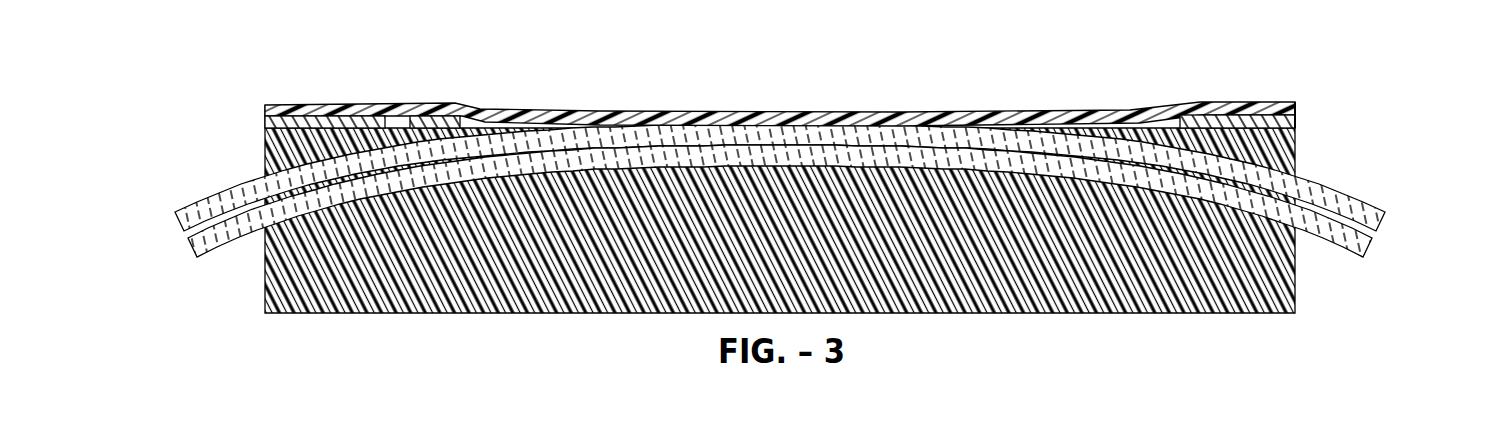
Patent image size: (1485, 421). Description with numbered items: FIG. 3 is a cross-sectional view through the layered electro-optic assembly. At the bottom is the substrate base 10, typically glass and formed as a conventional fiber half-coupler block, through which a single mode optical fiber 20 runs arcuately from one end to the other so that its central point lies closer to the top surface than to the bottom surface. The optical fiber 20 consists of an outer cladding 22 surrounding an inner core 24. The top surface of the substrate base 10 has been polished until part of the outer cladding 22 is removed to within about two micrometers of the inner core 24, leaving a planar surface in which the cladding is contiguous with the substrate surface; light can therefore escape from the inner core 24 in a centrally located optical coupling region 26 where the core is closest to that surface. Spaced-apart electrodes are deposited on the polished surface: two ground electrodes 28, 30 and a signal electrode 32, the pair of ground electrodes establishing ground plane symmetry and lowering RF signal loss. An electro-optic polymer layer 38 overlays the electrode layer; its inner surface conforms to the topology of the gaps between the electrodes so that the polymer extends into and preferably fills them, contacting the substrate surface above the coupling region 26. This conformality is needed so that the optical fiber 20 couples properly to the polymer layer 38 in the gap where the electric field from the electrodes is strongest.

The substrate base 10 is at (1185, 312).
The single mode optical fiber 20 is at (783, 191).
The outer cladding 22 is at (1353, 212).
The inner core 24 is at (1378, 240).
The optical coupling region 26 is at (755, 118).
The ground electrode 28 is at (1297, 118).
The ground electrode 30 is at (265, 120).
The signal electrode 32 is at (430, 117).
The electro-optic polymer layer 38 is at (1125, 126).